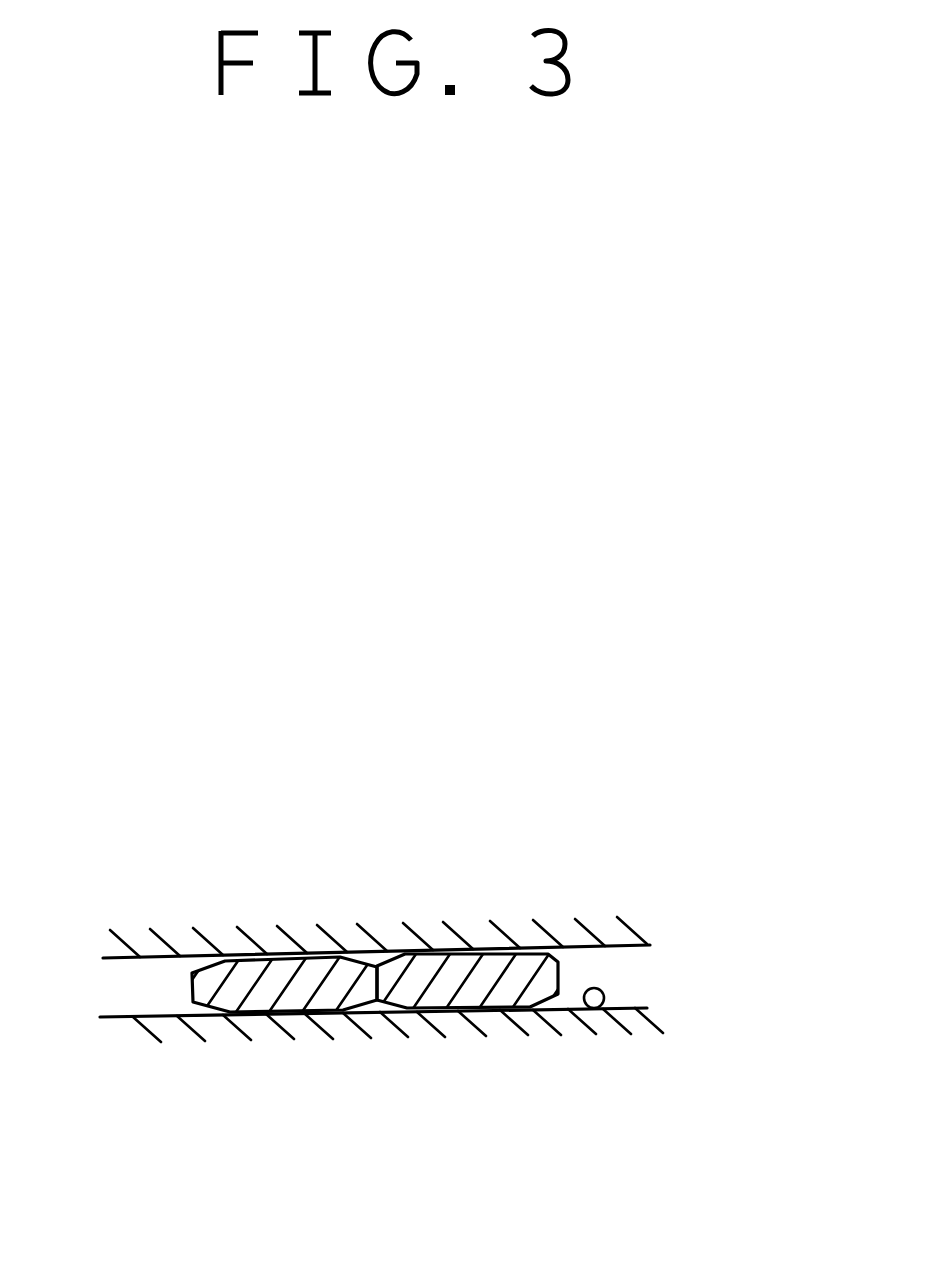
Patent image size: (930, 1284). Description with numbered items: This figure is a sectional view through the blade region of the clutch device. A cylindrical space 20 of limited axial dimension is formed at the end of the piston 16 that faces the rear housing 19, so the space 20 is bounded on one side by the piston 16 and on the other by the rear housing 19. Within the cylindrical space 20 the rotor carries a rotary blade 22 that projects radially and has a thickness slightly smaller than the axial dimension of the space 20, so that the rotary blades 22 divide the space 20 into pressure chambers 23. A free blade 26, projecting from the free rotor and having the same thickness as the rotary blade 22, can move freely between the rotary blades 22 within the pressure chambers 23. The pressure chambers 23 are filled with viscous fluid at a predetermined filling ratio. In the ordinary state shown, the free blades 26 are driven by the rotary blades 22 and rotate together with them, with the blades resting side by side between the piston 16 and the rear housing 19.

The piston 16 is at (143, 1030).
The rear housing 19 is at (620, 917).
The cylindrical space 20 is at (603, 1008).
The rotary blades 22 is at (287, 977).
The pressure chambers 23 is at (147, 977).
The free blades 26 is at (477, 962).